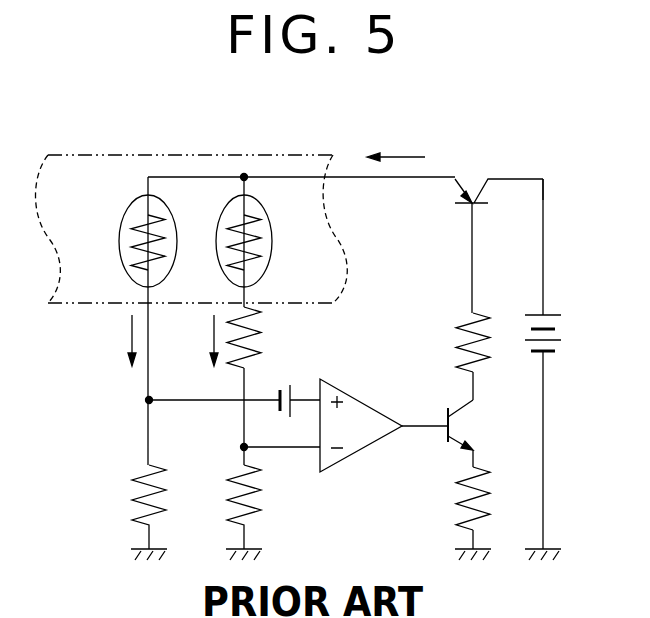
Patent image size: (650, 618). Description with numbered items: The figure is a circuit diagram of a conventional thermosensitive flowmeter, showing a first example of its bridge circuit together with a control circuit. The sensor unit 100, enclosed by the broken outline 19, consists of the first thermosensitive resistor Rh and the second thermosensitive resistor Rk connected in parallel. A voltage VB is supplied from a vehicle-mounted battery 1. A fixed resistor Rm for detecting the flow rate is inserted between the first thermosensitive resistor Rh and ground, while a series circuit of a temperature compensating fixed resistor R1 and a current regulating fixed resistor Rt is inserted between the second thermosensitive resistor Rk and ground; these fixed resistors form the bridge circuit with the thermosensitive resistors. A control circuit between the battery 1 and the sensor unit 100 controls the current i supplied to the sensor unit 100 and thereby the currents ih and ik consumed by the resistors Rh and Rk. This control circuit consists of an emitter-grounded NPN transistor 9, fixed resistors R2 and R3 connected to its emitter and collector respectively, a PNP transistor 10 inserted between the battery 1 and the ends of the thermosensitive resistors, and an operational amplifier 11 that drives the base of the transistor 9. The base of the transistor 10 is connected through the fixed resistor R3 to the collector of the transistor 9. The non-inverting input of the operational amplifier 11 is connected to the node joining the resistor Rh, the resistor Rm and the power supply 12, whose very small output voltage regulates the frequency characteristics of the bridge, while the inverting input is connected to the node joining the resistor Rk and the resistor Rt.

The sensor unit 19 is at (203, 155).
The sensor unit 100 is at (187, 239).
The first thermosensitive resistor Rh is at (120, 231).
The second thermosensitive resistor Rk is at (216, 231).
The current supplied to the first thermosensitive resistor ih is at (128, 342).
The current supplied to the second thermosensitive resistor ik is at (210, 342).
The current supplied to the sensor unit i is at (397, 155).
The temperature compensating fixed resistor R1 is at (262, 334).
The fixed resistor R2 is at (452, 505).
The fixed resistor R3 is at (452, 348).
The fixed resistor for detecting the flow rate Rm is at (130, 502).
The current regulating fixed resistor Rt is at (262, 493).
The PNP transistor 10 is at (448, 190).
The battery 1 is at (550, 313).
The voltage VB is at (545, 222).
The power supply 12 is at (288, 381).
The operational amplifier 11 is at (350, 464).
The emitter-grounded NPN transistor 9 is at (478, 425).